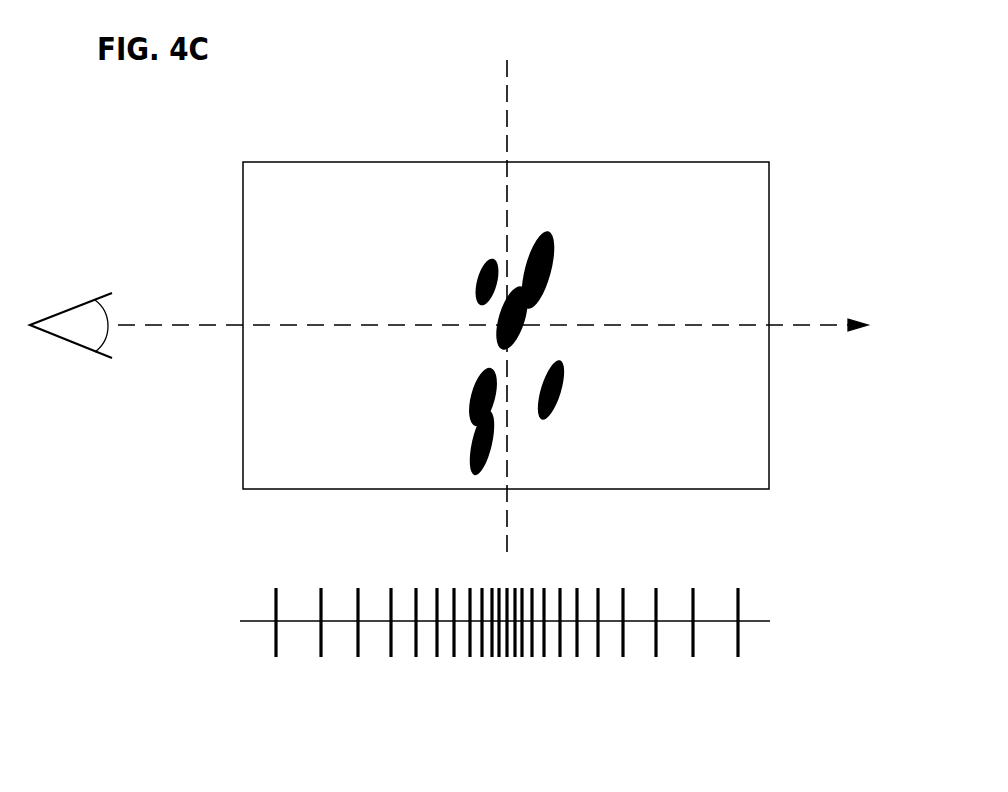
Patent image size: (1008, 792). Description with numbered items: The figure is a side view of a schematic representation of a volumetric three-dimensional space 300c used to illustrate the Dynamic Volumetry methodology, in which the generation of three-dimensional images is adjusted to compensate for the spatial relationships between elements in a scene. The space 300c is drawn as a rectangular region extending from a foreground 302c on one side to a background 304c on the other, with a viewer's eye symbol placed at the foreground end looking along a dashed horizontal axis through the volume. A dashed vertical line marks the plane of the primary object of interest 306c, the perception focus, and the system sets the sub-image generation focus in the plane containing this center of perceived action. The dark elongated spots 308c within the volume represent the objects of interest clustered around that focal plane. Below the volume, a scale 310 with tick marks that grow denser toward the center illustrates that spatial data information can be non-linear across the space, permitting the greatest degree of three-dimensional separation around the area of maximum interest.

The volumetric 3D space 300c is at (660, 115).
The foreground 302c is at (242, 425).
The background 304c is at (770, 193).
The primary object of interest 306c is at (507, 197).
The focused beamlet spot 308c is at (560, 365).
The intensity distribution scale 310 is at (507, 662).